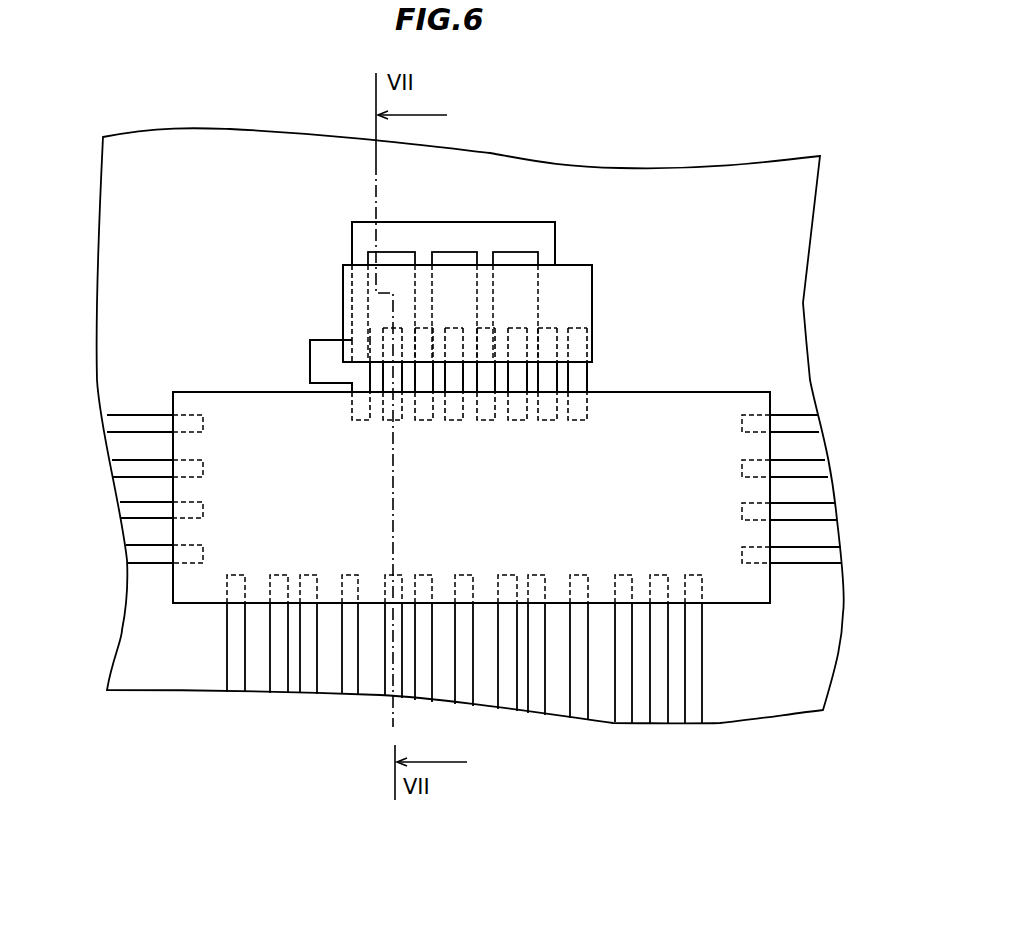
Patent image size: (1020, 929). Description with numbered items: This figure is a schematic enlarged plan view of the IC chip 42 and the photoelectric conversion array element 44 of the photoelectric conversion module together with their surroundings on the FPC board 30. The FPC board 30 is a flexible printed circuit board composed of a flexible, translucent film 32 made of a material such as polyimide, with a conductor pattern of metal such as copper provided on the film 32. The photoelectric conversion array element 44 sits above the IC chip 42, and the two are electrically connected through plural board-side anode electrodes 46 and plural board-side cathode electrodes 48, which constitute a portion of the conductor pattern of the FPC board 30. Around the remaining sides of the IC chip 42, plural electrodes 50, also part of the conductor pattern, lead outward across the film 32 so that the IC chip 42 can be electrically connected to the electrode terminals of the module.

The FPC board 30 is at (630, 178).
The film 32 is at (571, 186).
The IC chip 42 is at (690, 392).
The photoelectric conversion array element 44 is at (592, 265).
The board-side anode electrodes 46 is at (460, 423).
The board-side cathode electrodes 48 is at (425, 312).
The electrodes 50 is at (130, 467).